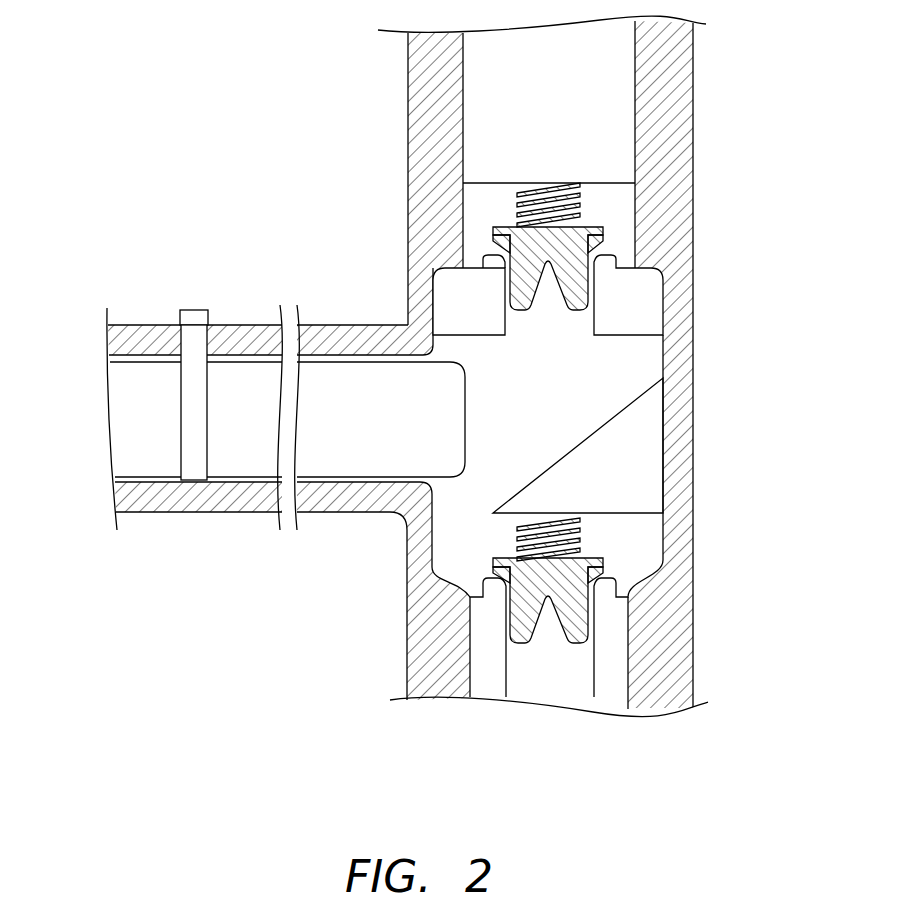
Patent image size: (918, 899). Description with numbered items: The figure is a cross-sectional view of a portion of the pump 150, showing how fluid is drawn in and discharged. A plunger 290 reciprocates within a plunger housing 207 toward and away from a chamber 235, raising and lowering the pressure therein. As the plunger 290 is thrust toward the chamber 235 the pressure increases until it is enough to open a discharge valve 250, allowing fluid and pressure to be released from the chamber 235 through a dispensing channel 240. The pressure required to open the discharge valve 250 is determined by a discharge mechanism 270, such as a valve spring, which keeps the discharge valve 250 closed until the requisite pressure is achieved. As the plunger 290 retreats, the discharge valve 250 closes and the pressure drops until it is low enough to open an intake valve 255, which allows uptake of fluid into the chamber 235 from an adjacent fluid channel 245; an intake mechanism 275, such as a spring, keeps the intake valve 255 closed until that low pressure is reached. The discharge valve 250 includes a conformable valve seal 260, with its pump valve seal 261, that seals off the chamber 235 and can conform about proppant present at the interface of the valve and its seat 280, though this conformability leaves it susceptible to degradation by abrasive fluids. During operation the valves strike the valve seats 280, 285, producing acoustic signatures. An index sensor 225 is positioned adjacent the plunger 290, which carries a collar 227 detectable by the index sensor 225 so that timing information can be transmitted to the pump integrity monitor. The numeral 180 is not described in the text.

The pump 150 is at (157, 53).
The valve body 180 is at (650, 318).
The plunger housing 207 is at (325, 328).
The index sensor 225 is at (174, 418).
The collar 227 is at (198, 467).
The chamber 235 is at (563, 406).
The dispensing channel 240 is at (510, 213).
The fluid channel 245 is at (568, 688).
The discharge valve 250 is at (597, 292).
The intake valve 255 is at (603, 563).
The conformable valve seal 260 is at (603, 238).
The valve seal 261 is at (503, 258).
The discharge mechanism 270 is at (587, 195).
The intake mechanism 275 is at (490, 248).
The seat 280 is at (443, 283).
The valve seat 285 is at (603, 667).
The plunger 290 is at (373, 453).